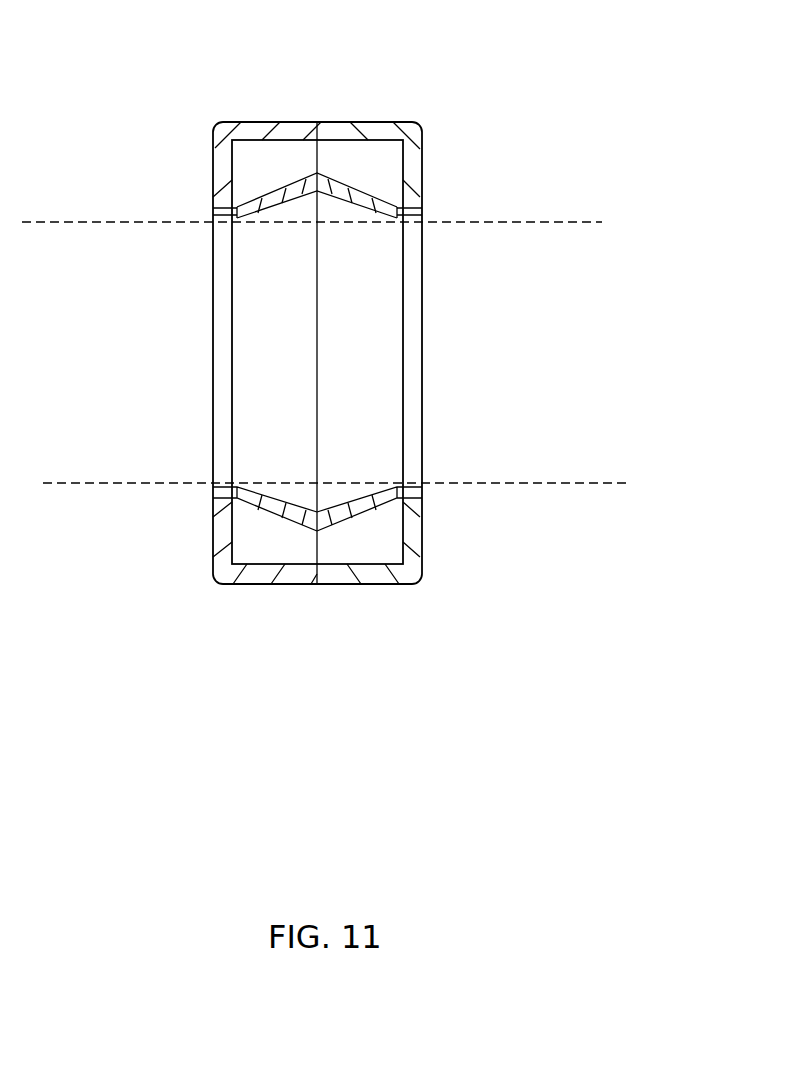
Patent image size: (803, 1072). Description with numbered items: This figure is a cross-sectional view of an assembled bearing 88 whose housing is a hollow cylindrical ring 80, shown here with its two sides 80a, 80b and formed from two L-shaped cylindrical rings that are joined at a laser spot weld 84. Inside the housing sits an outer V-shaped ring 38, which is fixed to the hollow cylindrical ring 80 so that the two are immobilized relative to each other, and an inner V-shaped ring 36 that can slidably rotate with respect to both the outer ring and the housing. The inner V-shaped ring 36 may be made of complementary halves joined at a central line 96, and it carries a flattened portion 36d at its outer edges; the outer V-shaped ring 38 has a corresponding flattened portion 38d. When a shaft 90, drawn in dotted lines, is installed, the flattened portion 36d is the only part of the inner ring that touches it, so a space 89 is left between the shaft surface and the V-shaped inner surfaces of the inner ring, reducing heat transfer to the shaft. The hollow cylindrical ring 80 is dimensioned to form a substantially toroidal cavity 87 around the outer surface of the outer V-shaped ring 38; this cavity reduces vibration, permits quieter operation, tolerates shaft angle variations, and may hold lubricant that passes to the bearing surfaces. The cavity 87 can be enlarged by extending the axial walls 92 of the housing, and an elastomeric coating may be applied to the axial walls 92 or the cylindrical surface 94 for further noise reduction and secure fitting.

The hollow cylindrical ring 80 is at (384, 122).
The first side wall of housing 80a is at (422, 122).
The second side wall of housing 80b is at (222, 122).
The laser spot weld 84 is at (316, 130).
The cavity 87 is at (272, 167).
The space 89 is at (327, 213).
The shaft 90 is at (533, 222).
The central line 96 is at (318, 378).
The outer V-shaped ring 38 is at (258, 195).
The inner V-shaped ring 36 is at (270, 212).
The flattened portion 36d is at (223, 482).
The lower sealing lip 38d is at (415, 483).
The bearing 88 is at (181, 543).
The axial walls 92 is at (437, 522).
The cylindrical surface 94 is at (303, 616).